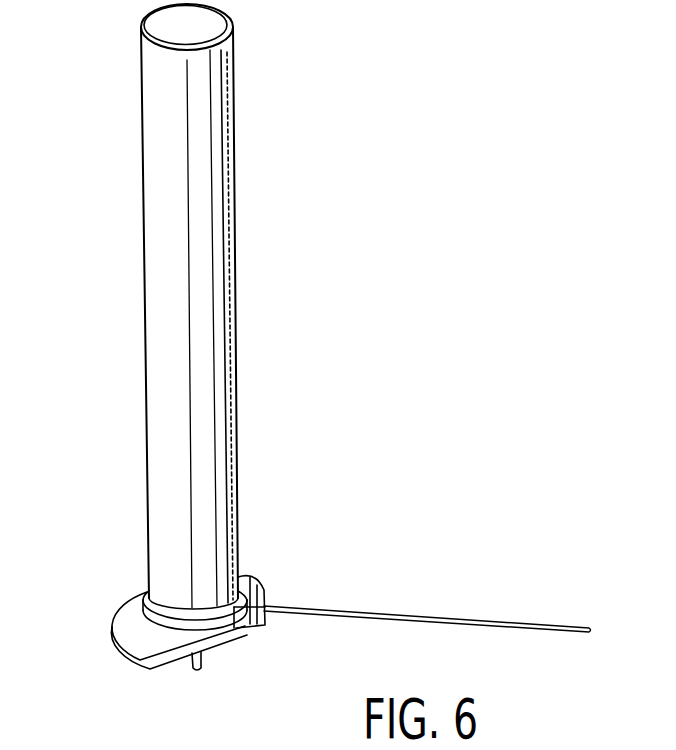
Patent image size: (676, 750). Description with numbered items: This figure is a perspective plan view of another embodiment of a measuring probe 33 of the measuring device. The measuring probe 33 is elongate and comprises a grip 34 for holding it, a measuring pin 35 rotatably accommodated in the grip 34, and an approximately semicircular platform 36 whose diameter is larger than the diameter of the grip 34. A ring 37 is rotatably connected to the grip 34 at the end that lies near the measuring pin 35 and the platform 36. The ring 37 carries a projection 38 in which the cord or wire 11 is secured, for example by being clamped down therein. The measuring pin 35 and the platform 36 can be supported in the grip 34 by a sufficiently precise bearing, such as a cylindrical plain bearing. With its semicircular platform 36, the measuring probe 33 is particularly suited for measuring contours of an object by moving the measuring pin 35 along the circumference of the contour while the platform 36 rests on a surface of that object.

The grip 34 is at (236, 88).
The measuring probe 33 is at (215, 365).
The ring 37 is at (168, 628).
The semicircular platform 36 is at (125, 615).
The measuring pin 35 is at (202, 665).
The projection 38 is at (267, 593).
The wire 11 is at (408, 615).